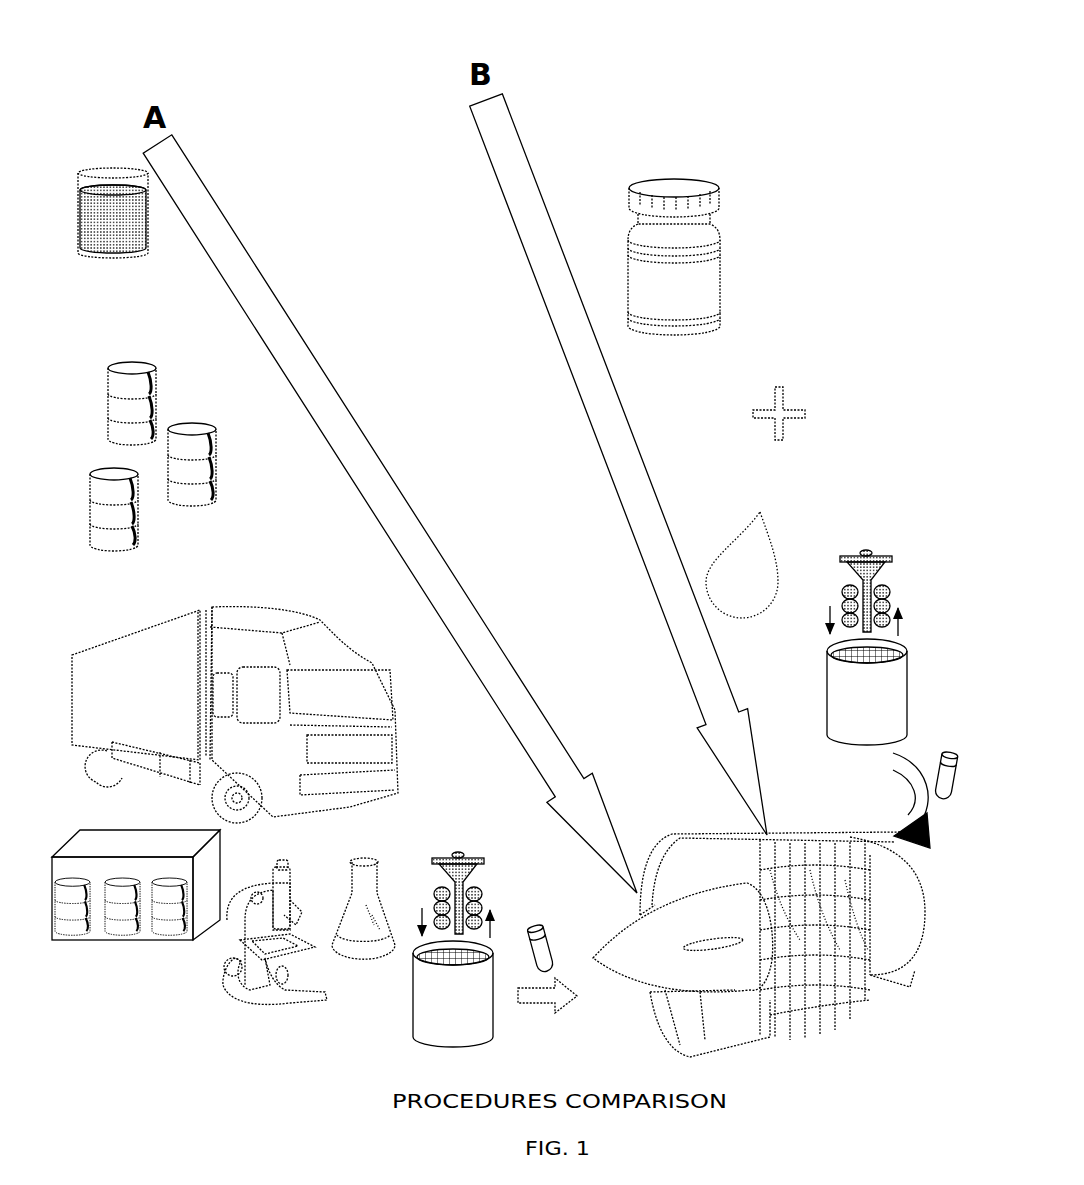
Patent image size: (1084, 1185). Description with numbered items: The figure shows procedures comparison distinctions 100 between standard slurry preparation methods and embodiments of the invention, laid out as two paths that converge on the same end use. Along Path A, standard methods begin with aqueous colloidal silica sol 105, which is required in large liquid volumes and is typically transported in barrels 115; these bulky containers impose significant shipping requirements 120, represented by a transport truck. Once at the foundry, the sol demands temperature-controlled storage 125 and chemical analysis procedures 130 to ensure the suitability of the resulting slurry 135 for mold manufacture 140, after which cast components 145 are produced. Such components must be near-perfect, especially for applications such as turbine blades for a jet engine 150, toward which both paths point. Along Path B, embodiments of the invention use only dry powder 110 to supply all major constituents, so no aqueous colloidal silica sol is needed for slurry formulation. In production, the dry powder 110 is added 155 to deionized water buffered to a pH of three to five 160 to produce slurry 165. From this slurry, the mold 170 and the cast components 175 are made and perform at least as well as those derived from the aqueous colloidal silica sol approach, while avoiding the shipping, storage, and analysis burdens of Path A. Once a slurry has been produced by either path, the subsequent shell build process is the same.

The procedures comparison distinctions 100 is at (85, 31).
The aqueous colloidal silica sol 105 is at (98, 167).
The dry powder 110 is at (716, 178).
The barrels 115 is at (192, 424).
The shipping requirements 120 is at (268, 600).
The temperature-controlled storage 125 is at (136, 947).
The chemical analysis procedures 130 is at (365, 962).
The slurry 135 is at (419, 942).
The mold manufacture 140 is at (474, 855).
The cast components 145 is at (549, 928).
The jet engine 150 is at (697, 825).
The adding step 155 is at (800, 392).
The deionized water buffered to pH 3 to 5 160 is at (770, 528).
The slurry 165 is at (836, 646).
The mold 170 is at (884, 553).
The cast components 175 is at (950, 755).